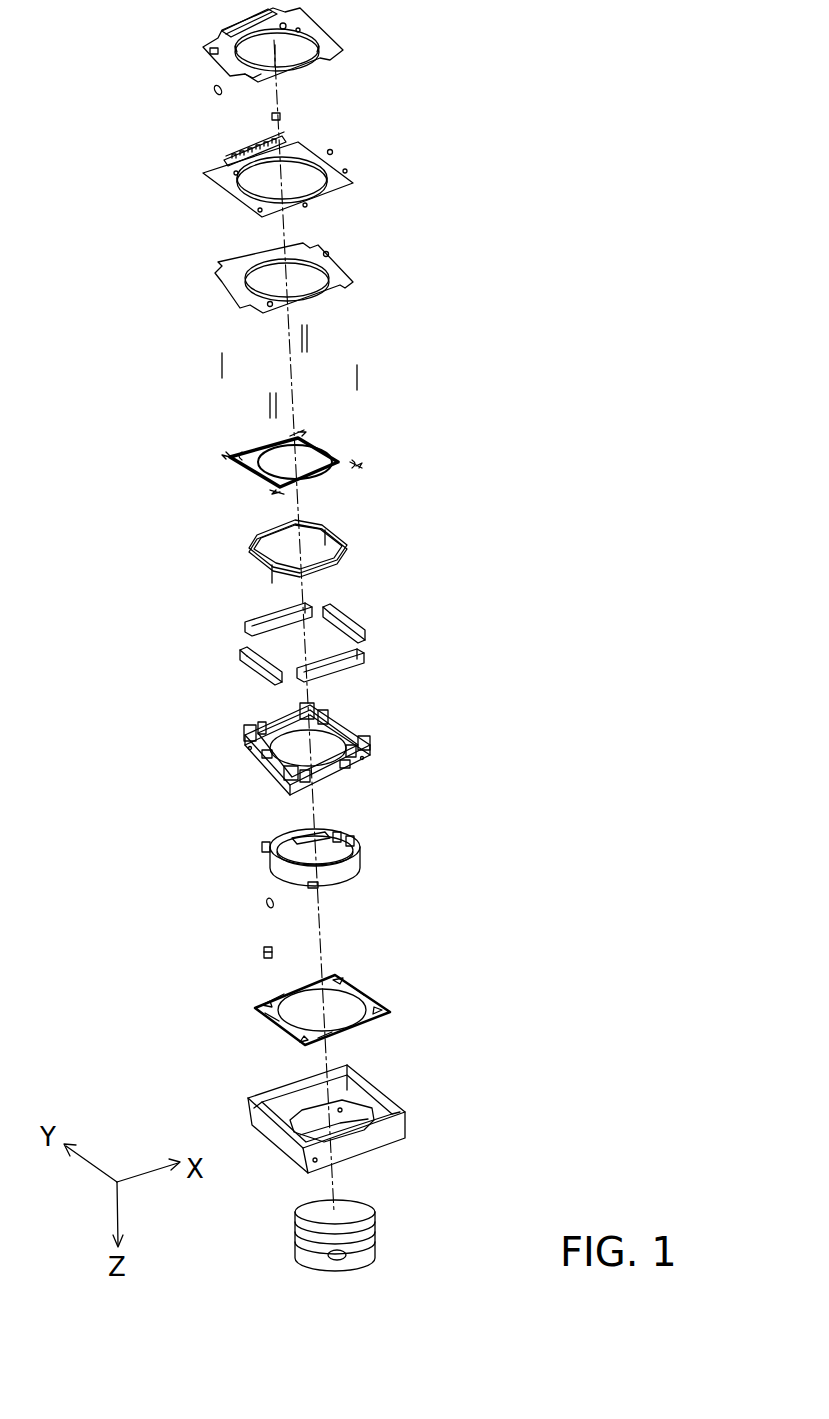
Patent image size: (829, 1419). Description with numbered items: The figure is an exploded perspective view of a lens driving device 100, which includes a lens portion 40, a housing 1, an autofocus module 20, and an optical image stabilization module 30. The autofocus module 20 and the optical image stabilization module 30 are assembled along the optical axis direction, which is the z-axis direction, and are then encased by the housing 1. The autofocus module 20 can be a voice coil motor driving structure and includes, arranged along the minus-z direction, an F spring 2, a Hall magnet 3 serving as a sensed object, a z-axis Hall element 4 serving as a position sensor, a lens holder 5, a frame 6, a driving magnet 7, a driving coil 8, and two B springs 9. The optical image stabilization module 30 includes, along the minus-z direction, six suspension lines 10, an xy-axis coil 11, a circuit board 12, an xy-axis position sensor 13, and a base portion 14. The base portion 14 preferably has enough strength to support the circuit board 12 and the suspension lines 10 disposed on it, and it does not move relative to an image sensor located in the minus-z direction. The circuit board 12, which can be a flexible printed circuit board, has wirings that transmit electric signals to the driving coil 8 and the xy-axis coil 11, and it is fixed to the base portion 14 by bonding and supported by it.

The lens driving device 100 is at (108, 40).
The housing 1 is at (402, 1118).
The F spring 2 is at (389, 1010).
The Hall magnet 3 is at (262, 953).
The z-axis Hall element 4 is at (266, 904).
The lens holder 5 is at (362, 851).
The frame 6 is at (376, 743).
The driving magnet 7 is at (364, 637).
The driving coil 8 is at (344, 537).
The B springs 9 is at (358, 464).
The suspension lines 10 is at (309, 330).
The xy-axis coil 11 is at (340, 268).
The circuit board 12 is at (333, 168).
The xy-axis position sensor 13 is at (270, 116).
The base portion 14 is at (325, 31).
The autofocus module 20 is at (437, 433).
The optical image stabilization module 30 is at (417, 12).
The lens portion 40 is at (375, 1229).